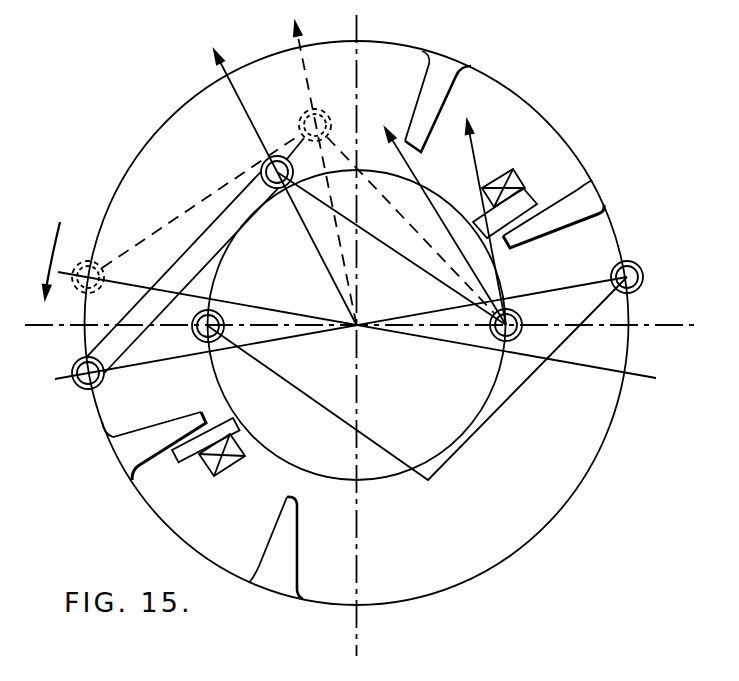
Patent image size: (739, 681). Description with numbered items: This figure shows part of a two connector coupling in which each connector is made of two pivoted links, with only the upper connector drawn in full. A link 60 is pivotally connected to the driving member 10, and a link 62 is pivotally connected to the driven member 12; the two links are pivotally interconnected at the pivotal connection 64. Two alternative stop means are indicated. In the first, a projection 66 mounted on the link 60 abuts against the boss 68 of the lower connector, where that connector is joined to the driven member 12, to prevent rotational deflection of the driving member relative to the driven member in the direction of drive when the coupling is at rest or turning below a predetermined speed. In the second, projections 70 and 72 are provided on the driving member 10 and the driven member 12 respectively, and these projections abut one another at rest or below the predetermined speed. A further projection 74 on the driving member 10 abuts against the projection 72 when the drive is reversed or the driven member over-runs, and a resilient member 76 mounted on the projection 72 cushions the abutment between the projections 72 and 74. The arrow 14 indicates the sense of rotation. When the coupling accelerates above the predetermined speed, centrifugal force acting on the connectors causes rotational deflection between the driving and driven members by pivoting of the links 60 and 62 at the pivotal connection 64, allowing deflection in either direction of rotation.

The driving member 10 is at (187, 104).
The driven member 12 is at (402, 477).
The direction of rotation 14 is at (41, 260).
The link 60 is at (207, 233).
The link 62 is at (428, 303).
The pivotal connection 64 is at (262, 168).
The projection 66 is at (200, 306).
The boss 68 is at (205, 340).
The projection 70 is at (573, 203).
The projection 72 is at (519, 203).
The projection 74 is at (438, 85).
The resilient member 76 is at (512, 170).